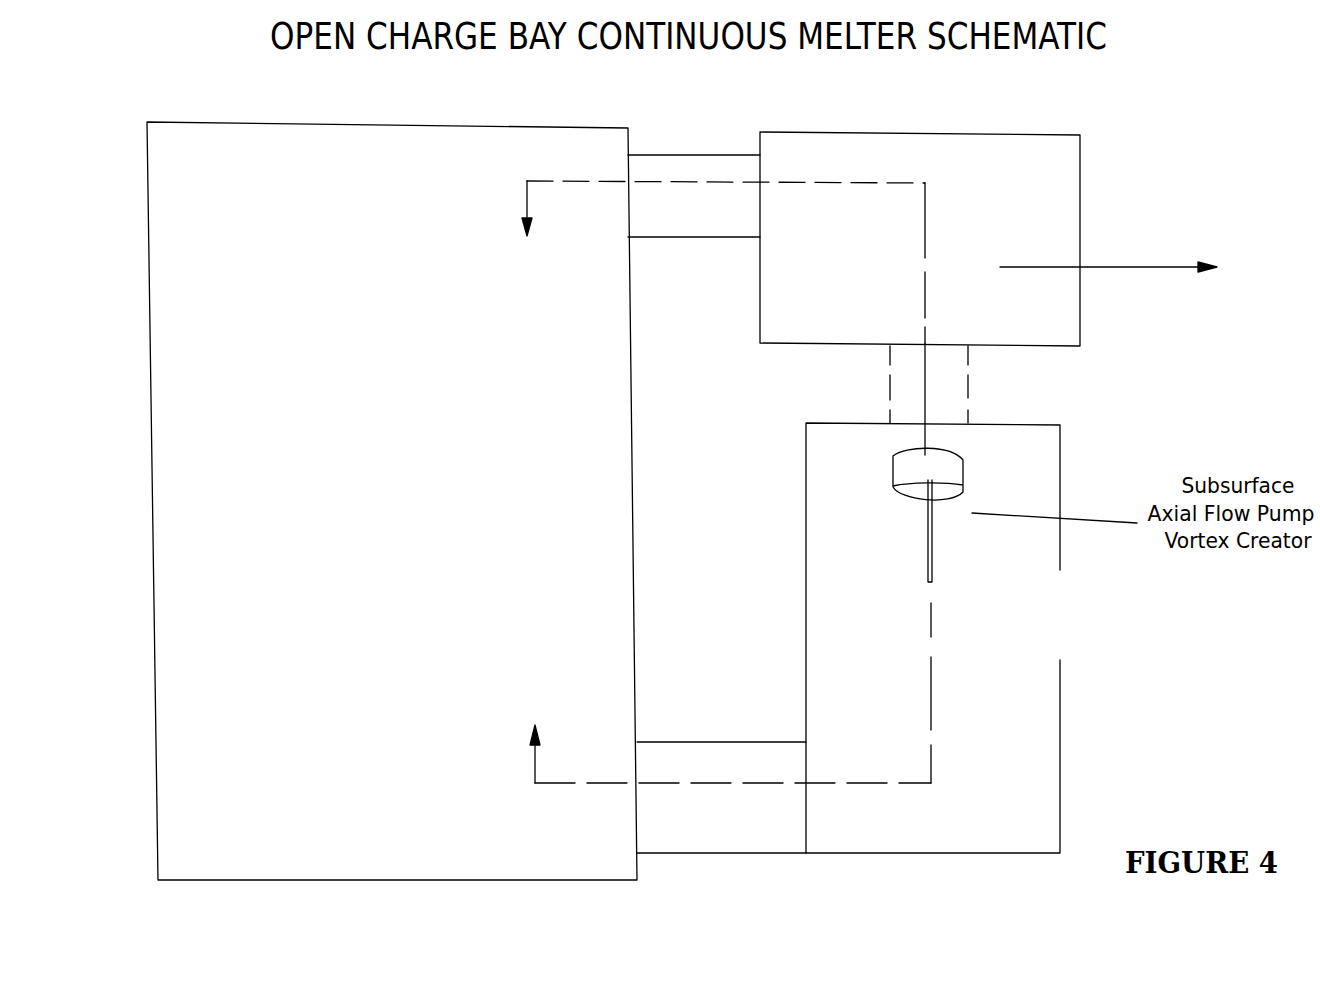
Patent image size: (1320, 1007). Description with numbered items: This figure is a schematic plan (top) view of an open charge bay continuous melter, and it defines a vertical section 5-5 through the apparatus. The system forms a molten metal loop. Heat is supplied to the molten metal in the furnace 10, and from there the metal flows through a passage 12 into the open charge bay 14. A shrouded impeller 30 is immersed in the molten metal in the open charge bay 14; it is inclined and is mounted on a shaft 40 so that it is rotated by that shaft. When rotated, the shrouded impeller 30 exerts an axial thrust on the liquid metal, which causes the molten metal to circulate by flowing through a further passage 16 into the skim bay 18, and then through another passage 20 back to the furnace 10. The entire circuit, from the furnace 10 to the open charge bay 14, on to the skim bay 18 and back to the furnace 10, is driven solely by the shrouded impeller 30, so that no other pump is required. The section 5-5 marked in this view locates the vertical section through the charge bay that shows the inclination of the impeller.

The furnace 10 is at (415, 604).
The passage 12 is at (685, 834).
The open charge bay 14 is at (965, 817).
The passage 16 is at (953, 394).
The skim bay 18 is at (1047, 195).
The passage 20 is at (668, 228).
The shrouded impeller 30 is at (955, 469).
The shaft 40 is at (925, 535).
The section 5- 5 is at (524, 712).